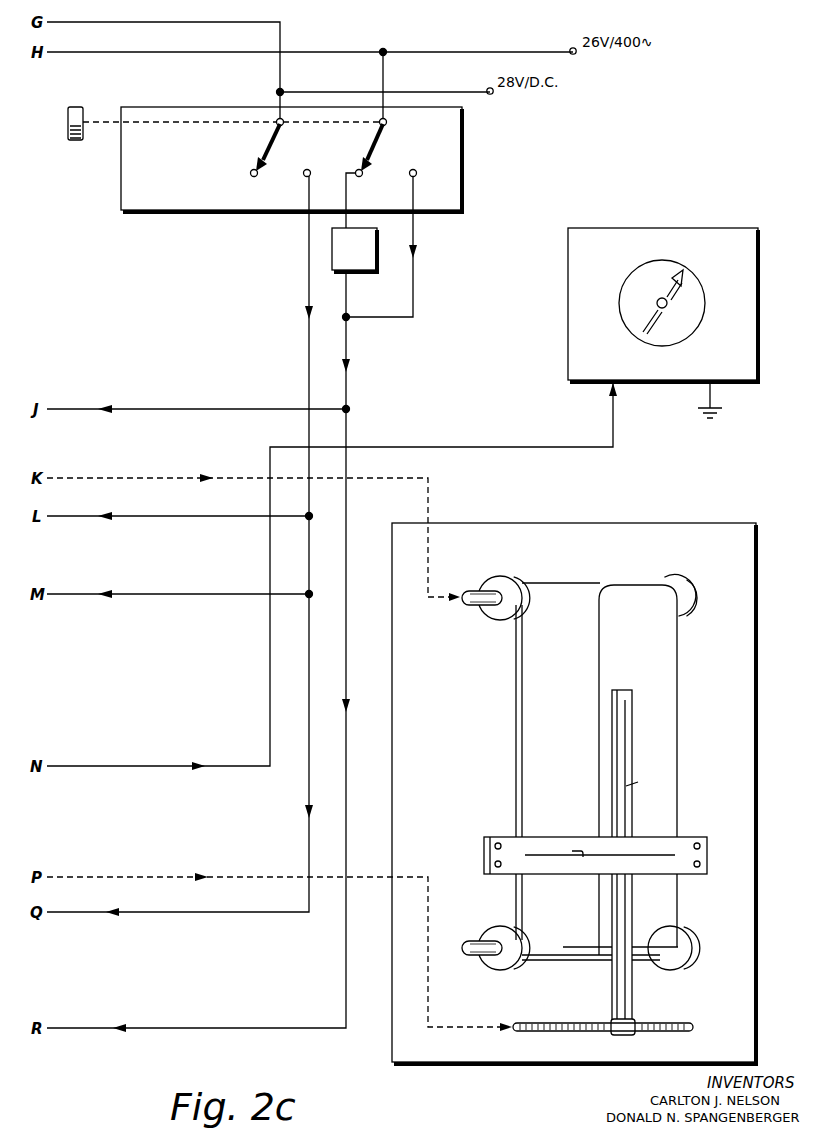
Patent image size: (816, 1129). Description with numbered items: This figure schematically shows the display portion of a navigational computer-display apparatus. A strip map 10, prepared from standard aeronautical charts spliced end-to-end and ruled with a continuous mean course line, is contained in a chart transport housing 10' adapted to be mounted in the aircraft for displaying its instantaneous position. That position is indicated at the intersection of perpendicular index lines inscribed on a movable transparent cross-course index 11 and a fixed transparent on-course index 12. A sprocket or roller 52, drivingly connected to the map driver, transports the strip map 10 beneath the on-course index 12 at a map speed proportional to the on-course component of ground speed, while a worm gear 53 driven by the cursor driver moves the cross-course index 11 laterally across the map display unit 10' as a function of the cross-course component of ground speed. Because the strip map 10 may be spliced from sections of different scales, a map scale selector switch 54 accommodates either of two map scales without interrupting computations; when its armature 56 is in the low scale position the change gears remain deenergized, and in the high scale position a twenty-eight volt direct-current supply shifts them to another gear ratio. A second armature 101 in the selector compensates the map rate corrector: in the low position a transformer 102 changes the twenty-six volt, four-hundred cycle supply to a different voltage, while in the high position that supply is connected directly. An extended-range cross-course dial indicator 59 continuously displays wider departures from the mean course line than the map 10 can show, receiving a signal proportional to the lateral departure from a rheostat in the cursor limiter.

The map scale selector switch 54 is at (176, 107).
The armature 56 is at (267, 138).
The armature 101 is at (383, 131).
The transformer 102 is at (360, 271).
The extended-range cross-course dial indicator 59 is at (568, 298).
The chart transport housing 10' is at (591, 769).
The strip map 10 is at (664, 770).
The sprocket or roller 52 is at (501, 580).
The cross-course index 11 is at (631, 727).
The on-course index 12 is at (523, 838).
The worm gear 53 is at (688, 1023).